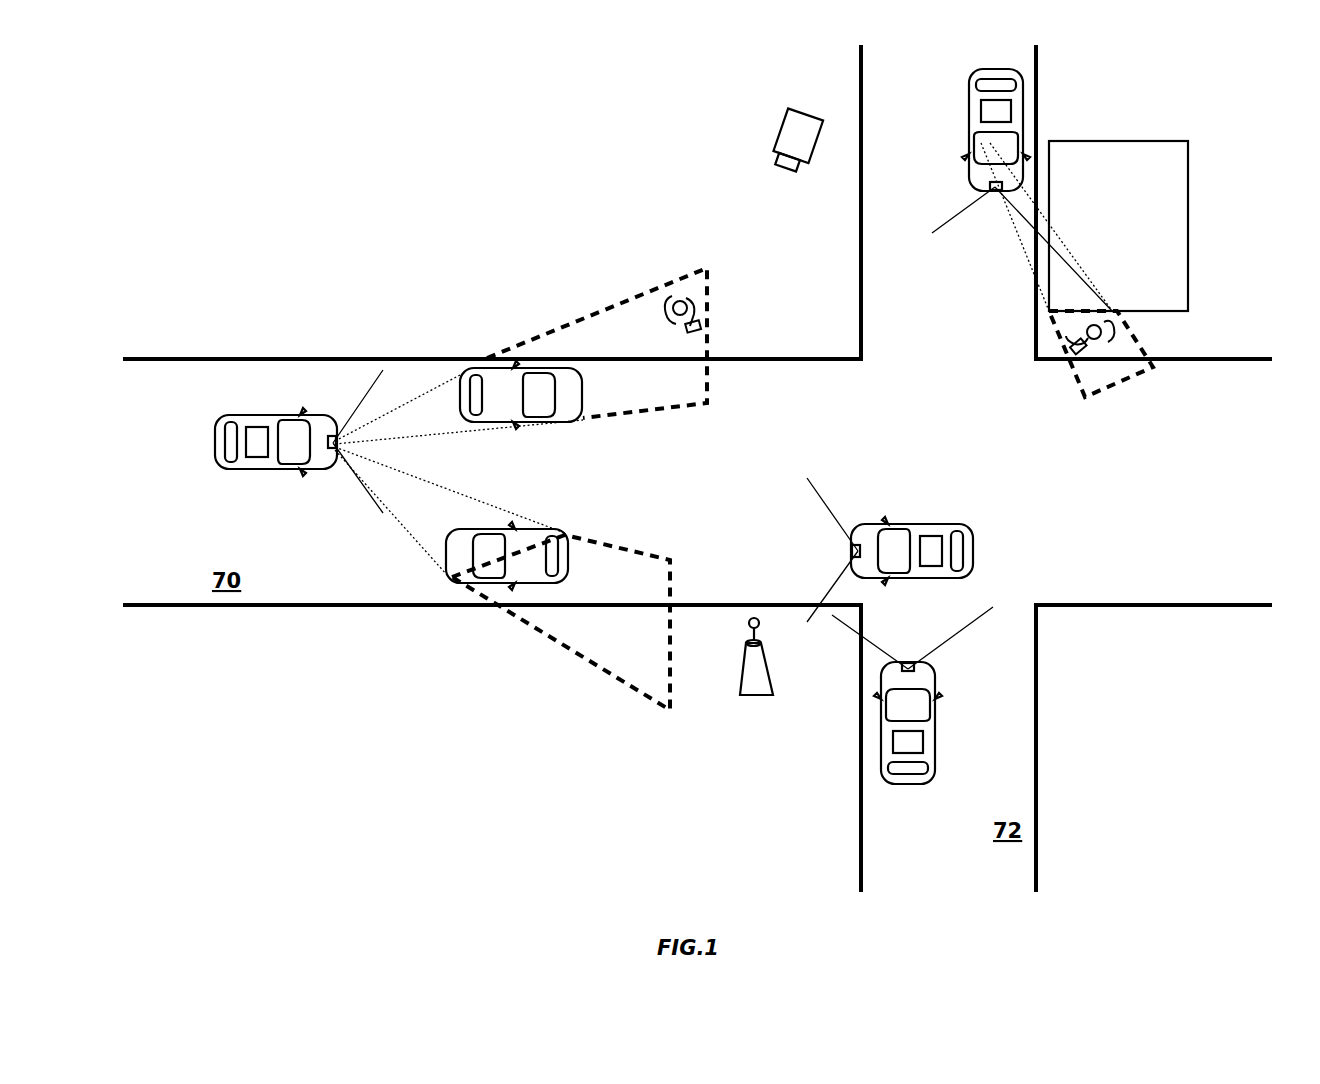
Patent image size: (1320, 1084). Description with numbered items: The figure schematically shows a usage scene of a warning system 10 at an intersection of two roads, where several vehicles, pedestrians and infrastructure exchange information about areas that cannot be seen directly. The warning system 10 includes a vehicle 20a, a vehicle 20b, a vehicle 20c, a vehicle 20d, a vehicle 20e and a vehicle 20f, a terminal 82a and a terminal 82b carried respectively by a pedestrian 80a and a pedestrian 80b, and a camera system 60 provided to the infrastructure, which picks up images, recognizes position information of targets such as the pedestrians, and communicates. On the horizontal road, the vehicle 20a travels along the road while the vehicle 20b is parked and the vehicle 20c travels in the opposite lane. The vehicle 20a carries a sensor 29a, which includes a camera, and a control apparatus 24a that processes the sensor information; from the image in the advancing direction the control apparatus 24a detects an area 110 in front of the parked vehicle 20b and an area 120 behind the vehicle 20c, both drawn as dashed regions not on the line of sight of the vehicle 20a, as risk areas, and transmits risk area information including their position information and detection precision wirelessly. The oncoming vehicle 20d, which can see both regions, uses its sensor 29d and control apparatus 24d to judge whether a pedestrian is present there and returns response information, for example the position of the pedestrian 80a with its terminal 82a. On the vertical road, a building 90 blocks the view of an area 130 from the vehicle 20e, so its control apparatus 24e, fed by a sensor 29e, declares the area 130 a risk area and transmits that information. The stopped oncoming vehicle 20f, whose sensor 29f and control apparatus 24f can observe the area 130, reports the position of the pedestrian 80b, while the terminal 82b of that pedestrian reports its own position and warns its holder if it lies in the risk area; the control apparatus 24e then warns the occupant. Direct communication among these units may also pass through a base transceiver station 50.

The warning system 10 is at (1242, 110).
The vehicle 20a is at (262, 440).
The vehicle 20b is at (462, 392).
The vehicle 20c is at (447, 553).
The vehicle 20d is at (905, 541).
The vehicle 20e is at (966, 157).
The vehicle 20f is at (935, 719).
The control apparatus 24a is at (270, 468).
The control apparatus 24d is at (931, 551).
The control apparatus 24e is at (996, 111).
The control apparatus 24f is at (908, 742).
The sensor 29a is at (325, 409).
The sensor 29d is at (856, 551).
The sensor 29e is at (996, 186).
The sensor 29f is at (908, 667).
The base transceiver station 50 is at (747, 641).
The camera system 60 is at (806, 113).
The pedestrian 80a is at (680, 298).
The pedestrian 80b is at (1108, 338).
The terminal 82a is at (700, 330).
The terminal 82b is at (1074, 352).
The building 90 is at (1152, 141).
The area 110 is at (540, 328).
The area 120 is at (572, 655).
The area 130 is at (1108, 396).